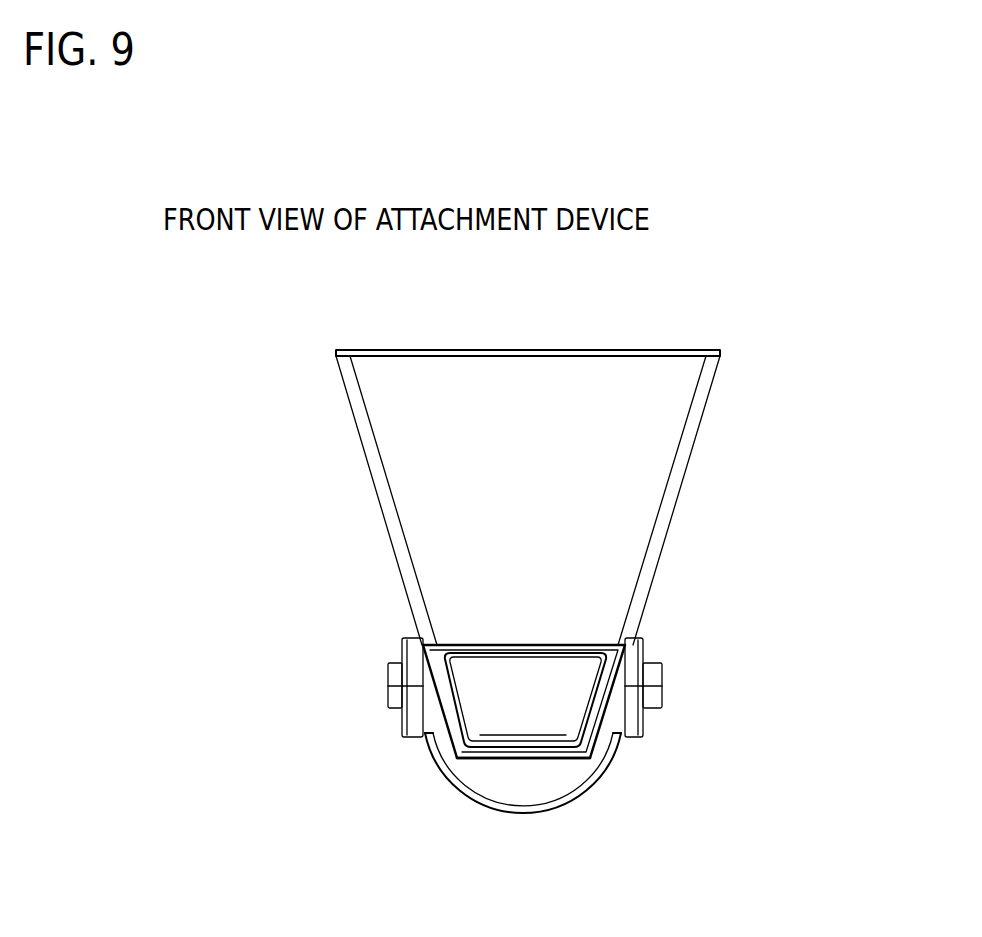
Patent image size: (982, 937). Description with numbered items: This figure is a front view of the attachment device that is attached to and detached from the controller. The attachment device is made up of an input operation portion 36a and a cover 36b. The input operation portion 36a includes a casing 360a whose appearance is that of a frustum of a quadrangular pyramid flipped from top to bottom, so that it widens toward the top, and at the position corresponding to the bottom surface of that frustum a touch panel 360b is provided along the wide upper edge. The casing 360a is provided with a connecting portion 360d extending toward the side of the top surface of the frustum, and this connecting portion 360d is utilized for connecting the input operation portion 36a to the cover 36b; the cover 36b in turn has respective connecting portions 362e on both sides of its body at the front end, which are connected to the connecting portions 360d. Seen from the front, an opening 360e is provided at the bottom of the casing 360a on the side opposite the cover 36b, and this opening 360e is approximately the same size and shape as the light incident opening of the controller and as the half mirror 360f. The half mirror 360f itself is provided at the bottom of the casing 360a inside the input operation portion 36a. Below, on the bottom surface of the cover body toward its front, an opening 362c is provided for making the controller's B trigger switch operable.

The input operation portion 36a is at (576, 460).
The touch panel 360b is at (673, 350).
The casing 360a is at (655, 462).
The connecting portion 362e is at (388, 684).
The connecting portion 360d is at (403, 733).
The opening 360e is at (547, 770).
The half mirror 360f is at (523, 705).
The opening 362c is at (503, 808).
The cover 36b is at (528, 763).